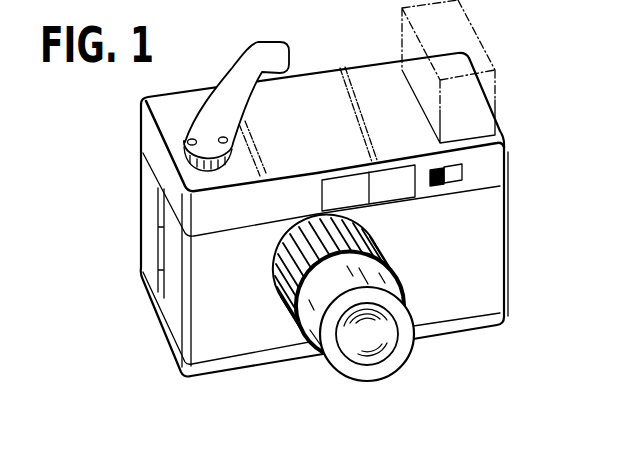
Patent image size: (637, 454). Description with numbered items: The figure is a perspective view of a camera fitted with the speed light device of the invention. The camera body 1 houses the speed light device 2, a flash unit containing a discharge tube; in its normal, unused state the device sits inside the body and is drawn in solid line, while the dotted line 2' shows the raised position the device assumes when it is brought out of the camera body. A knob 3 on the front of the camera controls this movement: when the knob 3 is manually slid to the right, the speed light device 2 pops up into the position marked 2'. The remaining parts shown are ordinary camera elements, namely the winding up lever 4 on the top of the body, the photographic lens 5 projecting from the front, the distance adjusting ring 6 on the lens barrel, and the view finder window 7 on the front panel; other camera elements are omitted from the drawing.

The camera body 1 is at (479, 265).
The speed light device 2 is at (463, 100).
The popped-up position of the speed light device 2' is at (467, 55).
The knob 3 is at (446, 185).
The winding up lever 4 is at (259, 43).
The photographic lens 5 is at (350, 343).
The distance adjusting ring 6 is at (287, 282).
The view finder window 7 is at (397, 174).